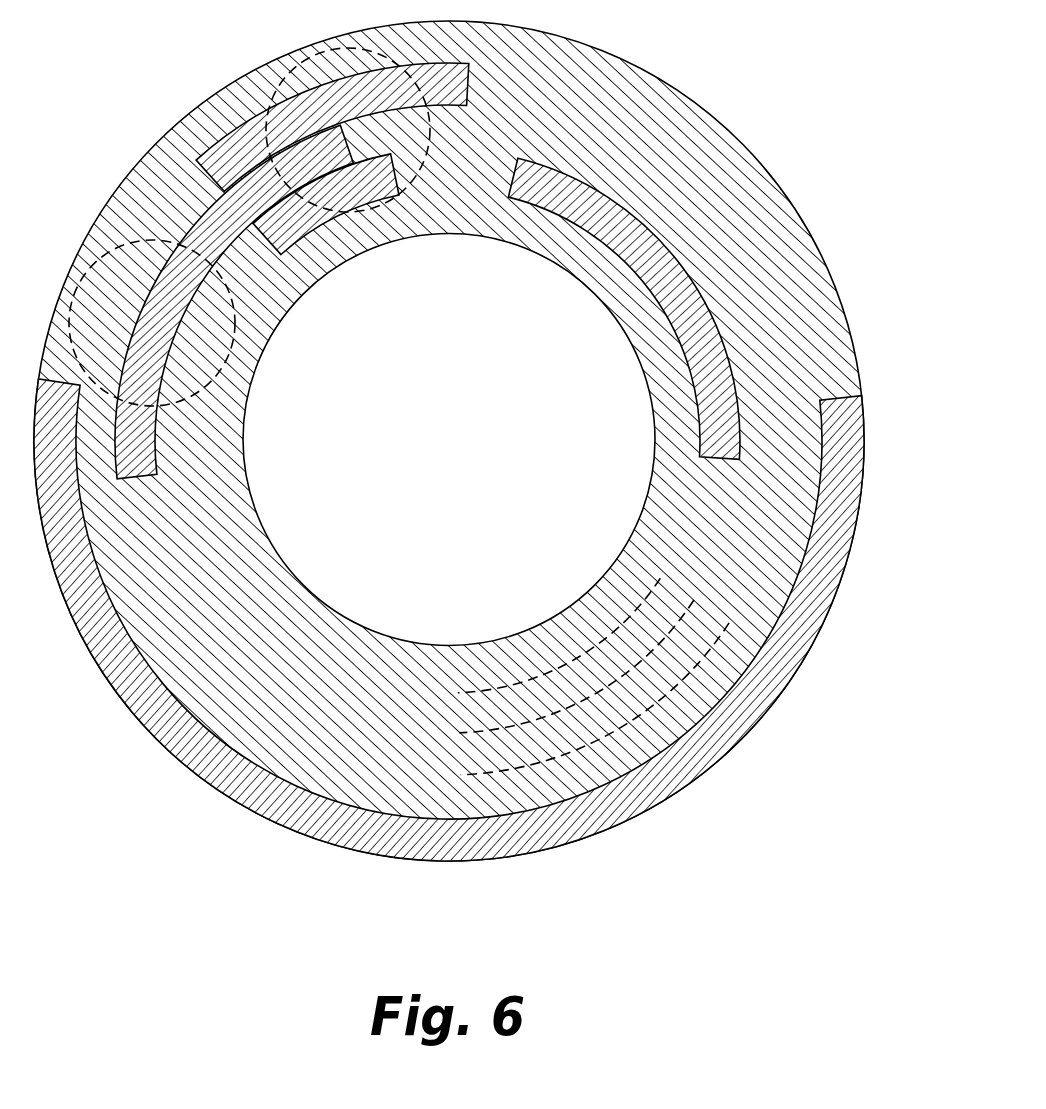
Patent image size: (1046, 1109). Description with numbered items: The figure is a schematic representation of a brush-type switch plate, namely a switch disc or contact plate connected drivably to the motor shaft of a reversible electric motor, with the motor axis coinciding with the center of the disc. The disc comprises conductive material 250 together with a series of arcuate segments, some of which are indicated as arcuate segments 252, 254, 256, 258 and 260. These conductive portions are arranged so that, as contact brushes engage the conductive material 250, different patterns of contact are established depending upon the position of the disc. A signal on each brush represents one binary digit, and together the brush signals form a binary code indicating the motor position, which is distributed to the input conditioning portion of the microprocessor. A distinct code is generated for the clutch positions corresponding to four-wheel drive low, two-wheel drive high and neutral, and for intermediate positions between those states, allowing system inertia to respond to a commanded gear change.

The conductive material 250 is at (792, 265).
The arcuate segment 252 is at (665, 243).
The arcuate segment 254 is at (230, 153).
The arcuate segment 256 is at (187, 260).
The arcuate segment 258 is at (319, 205).
The arcuate segment 260 is at (641, 785).